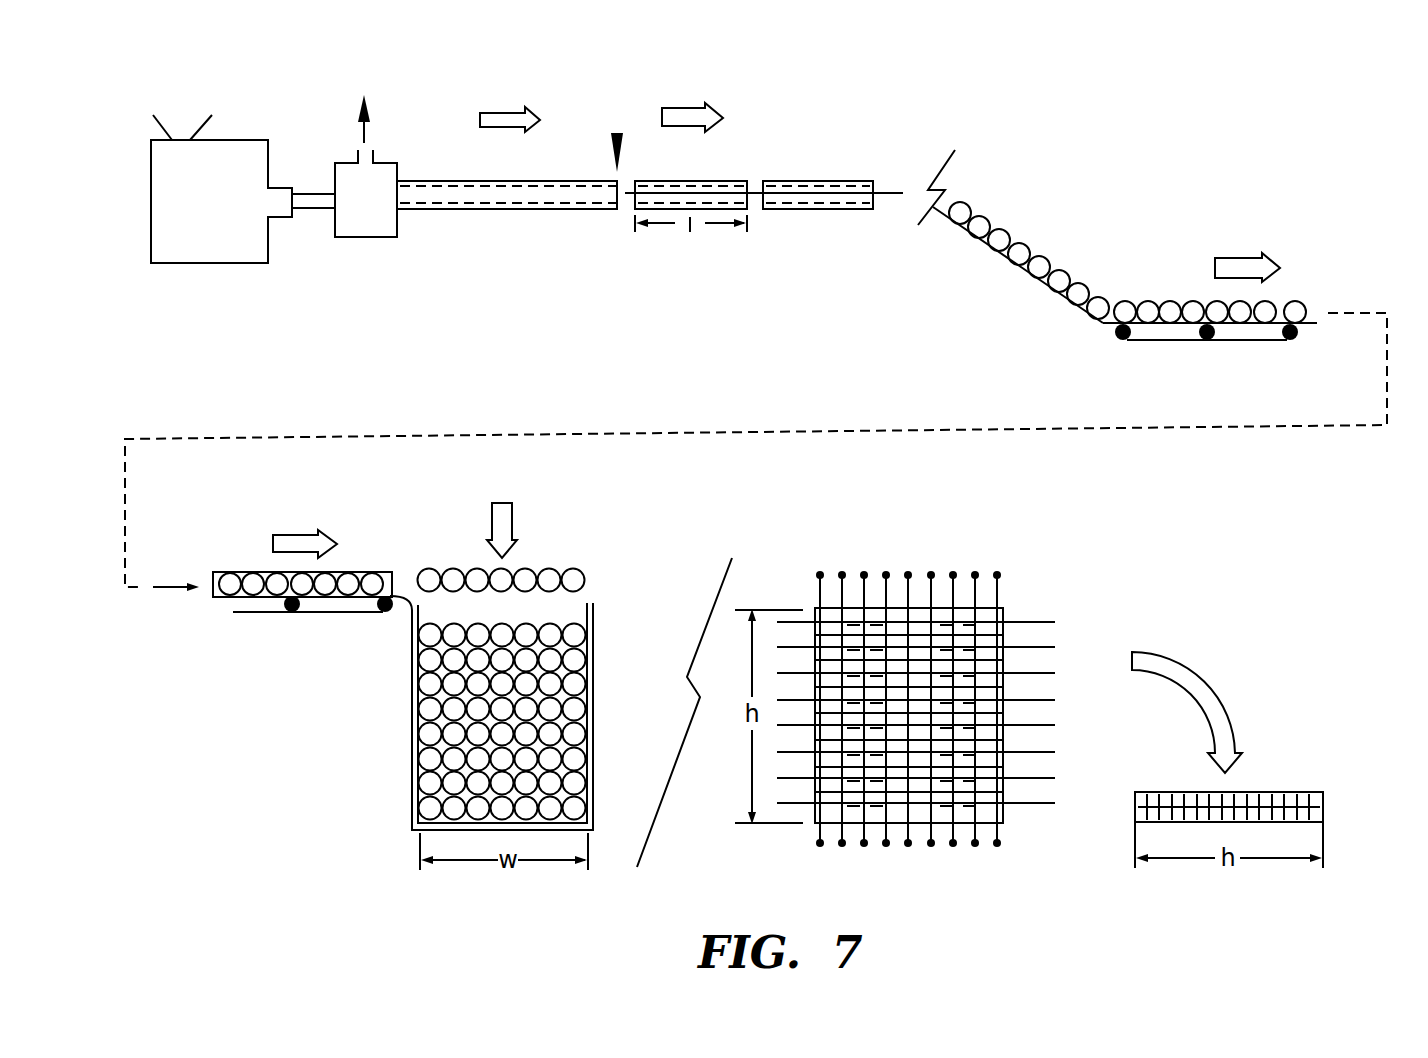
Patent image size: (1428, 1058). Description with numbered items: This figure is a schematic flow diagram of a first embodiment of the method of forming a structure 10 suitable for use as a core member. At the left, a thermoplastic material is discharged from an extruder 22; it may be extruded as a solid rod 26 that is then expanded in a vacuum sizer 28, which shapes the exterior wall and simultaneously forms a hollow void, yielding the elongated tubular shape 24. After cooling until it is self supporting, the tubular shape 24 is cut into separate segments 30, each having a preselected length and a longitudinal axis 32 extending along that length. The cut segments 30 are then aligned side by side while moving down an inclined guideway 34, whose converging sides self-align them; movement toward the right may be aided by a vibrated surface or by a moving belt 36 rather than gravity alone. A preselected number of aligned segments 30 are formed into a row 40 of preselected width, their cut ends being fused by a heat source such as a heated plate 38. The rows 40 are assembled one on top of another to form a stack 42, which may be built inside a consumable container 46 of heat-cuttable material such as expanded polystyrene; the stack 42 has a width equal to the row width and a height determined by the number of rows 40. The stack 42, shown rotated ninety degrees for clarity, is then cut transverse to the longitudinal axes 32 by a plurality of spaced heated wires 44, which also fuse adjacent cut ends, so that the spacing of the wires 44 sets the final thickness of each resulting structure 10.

The structure 10 is at (1280, 776).
The extruder 22 is at (190, 212).
The tubular shape 24 is at (535, 195).
The solid rod 26 is at (310, 208).
The vacuum sizer 28 is at (352, 212).
The segments 30 is at (780, 187).
The longitudinal axis 32 is at (893, 188).
The inclined guideway 34 is at (985, 242).
The moving belt 36 is at (1165, 342).
The heated plate 38 is at (243, 573).
The row 40 is at (541, 551).
The stack 42 is at (612, 652).
The heated wires 44 is at (863, 573).
The consumable container 46 is at (417, 698).